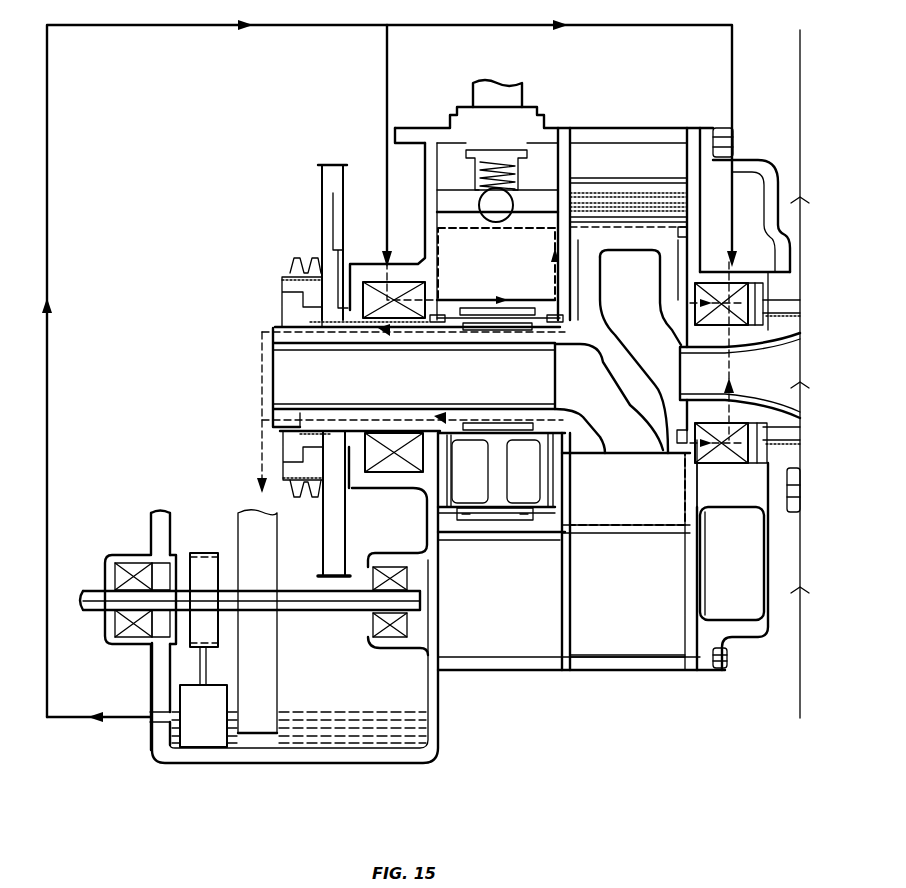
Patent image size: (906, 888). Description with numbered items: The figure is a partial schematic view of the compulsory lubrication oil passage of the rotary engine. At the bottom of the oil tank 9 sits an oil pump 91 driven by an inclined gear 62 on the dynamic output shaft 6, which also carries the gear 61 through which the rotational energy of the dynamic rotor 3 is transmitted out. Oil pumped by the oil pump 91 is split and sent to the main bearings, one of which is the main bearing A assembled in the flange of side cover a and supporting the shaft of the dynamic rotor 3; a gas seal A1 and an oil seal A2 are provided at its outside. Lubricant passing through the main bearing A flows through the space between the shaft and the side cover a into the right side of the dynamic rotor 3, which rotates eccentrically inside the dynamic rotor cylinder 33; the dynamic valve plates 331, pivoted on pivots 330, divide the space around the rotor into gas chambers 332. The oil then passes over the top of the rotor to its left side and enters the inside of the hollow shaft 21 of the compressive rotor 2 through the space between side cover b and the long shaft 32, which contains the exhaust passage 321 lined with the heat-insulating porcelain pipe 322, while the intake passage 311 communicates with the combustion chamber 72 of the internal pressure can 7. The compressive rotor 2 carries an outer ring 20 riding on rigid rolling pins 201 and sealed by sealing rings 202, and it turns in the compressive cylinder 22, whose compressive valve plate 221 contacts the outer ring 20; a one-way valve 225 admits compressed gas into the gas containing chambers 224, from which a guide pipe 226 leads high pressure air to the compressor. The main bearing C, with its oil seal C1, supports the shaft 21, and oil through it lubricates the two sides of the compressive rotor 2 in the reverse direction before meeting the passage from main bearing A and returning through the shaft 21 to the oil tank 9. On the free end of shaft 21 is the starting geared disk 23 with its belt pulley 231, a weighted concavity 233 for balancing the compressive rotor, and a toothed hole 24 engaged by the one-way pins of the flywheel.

The compressive cylinder 22 is at (448, 200).
The guide pipe 226 is at (500, 93).
The one-way valve 225 is at (512, 168).
The compressive valve plate 221 is at (440, 243).
The pivot 330 is at (663, 205).
The dynamic valve plate 331 is at (615, 196).
The intake passage 311 is at (688, 255).
The dynamic rotor 3 is at (667, 266).
The internal pressure vessel (can) 7 is at (794, 334).
The combustion chamber 72 is at (797, 408).
The gas seal A1 is at (756, 284).
The oil seal A2 is at (757, 463).
The main bearing A is at (725, 464).
The dynamic rotor cylinder 33 is at (585, 534).
The gas chamber 332 is at (647, 510).
The starting geared disk 23 is at (328, 188).
The weighted concavity 233 is at (338, 204).
The belt pulley 231 is at (292, 262).
The toothed hole 24 is at (283, 293).
The oil seal C1 is at (357, 276).
The long shaft 32 is at (277, 417).
The exhaust passage 321 is at (278, 367).
The heat-insulating porcelain pipe 322 is at (313, 350).
The hollow shaft 21 is at (340, 433).
The main bearing C is at (393, 468).
The compressive rotor 2 is at (497, 494).
The outer ring 20 is at (520, 519).
The sealing ring 202 is at (548, 522).
The rigid rolling pins 201 is at (465, 522).
The gas containing chamber 224 is at (491, 650).
The side cover b is at (561, 667).
The side cover a is at (690, 667).
The dynamic output shaft 6 is at (318, 612).
The inclined gear 62 is at (205, 558).
The oil pump 91 is at (185, 694).
The gear 61 is at (278, 689).
The oil tank 9 is at (353, 744).